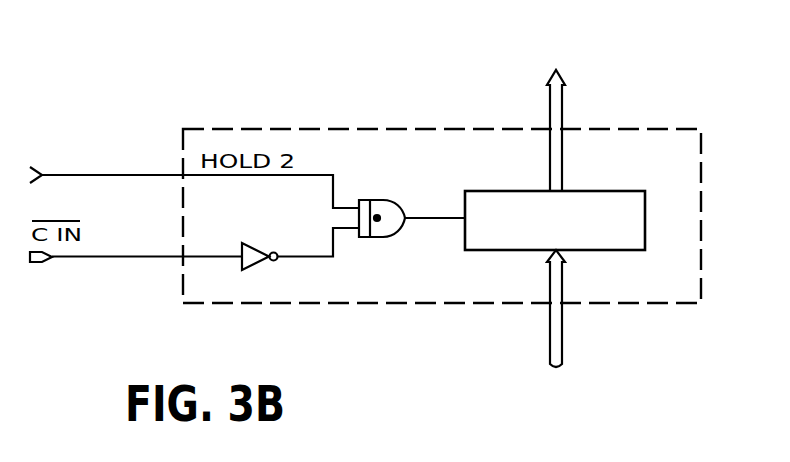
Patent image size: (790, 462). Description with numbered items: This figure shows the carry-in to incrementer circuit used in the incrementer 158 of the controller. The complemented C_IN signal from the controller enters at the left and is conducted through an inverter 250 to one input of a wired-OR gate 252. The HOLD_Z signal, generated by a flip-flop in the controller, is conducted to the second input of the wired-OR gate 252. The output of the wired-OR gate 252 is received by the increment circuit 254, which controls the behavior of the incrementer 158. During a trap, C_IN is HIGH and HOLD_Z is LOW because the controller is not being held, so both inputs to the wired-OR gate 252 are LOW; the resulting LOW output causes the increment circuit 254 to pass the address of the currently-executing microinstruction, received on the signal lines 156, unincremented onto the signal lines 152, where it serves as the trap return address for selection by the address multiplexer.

The signal lines 152 is at (563, 111).
The signal lines 156 is at (563, 345).
The incrementer 158 is at (665, 129).
The inverter 250 is at (251, 243).
The wired-OR gate 252 is at (377, 200).
The increment circuit 254 is at (626, 191).